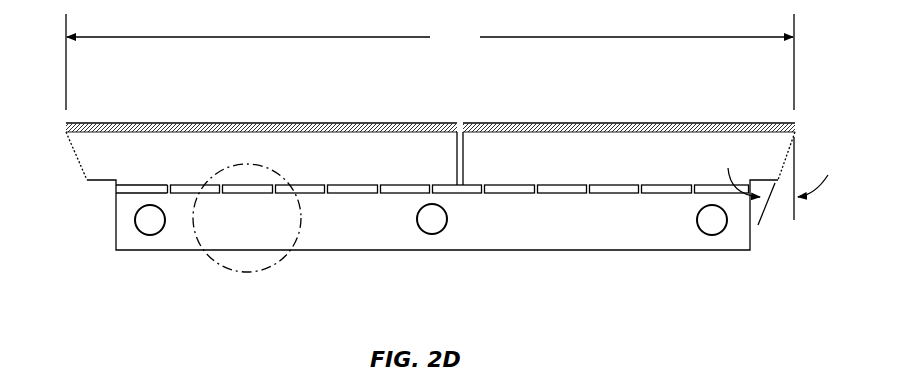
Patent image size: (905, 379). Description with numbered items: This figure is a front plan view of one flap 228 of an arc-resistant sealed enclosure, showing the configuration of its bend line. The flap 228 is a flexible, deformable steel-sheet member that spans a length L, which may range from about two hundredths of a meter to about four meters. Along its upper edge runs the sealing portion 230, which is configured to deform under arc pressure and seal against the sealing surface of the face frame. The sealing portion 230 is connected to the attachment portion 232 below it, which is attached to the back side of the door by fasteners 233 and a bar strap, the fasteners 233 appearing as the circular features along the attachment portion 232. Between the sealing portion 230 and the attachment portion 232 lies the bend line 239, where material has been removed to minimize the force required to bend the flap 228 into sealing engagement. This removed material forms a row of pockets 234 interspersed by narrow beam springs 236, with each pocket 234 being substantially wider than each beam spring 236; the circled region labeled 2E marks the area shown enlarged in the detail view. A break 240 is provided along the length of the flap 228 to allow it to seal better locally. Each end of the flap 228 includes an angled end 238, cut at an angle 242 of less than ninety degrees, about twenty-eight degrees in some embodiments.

The flap 228 is at (414, 105).
The sealing portion 230 is at (176, 150).
The attachment portion 232 is at (600, 233).
The fastener 233 is at (153, 226).
The pocket 234 is at (462, 193).
The beam spring 236 is at (432, 183).
The angled end 238 is at (76, 152).
The bend line 239 is at (113, 183).
The break 240 is at (458, 150).
The angle 242 is at (795, 181).
The enlarged view 2E is at (230, 272).
The length L is at (430, 62).